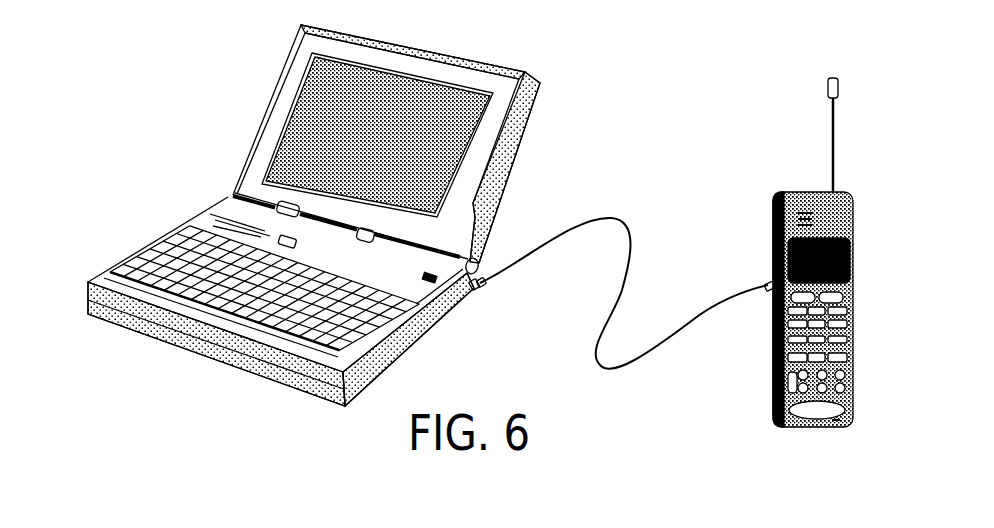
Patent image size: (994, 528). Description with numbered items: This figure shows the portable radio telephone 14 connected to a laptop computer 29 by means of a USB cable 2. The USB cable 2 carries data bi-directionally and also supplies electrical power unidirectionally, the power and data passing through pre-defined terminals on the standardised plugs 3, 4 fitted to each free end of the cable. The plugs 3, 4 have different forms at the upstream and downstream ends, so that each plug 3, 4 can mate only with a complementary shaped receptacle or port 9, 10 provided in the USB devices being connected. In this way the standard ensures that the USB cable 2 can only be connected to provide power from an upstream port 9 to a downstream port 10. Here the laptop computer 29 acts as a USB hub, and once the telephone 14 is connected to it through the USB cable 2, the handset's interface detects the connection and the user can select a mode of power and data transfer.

The laptop computer 29 is at (533, 129).
The USB cable 2 is at (618, 221).
The plug 3 is at (765, 282).
The plug 4 is at (482, 284).
The downstream port 10 is at (478, 287).
The upstream port 9 is at (771, 288).
The portable radio telephone 14 is at (767, 404).